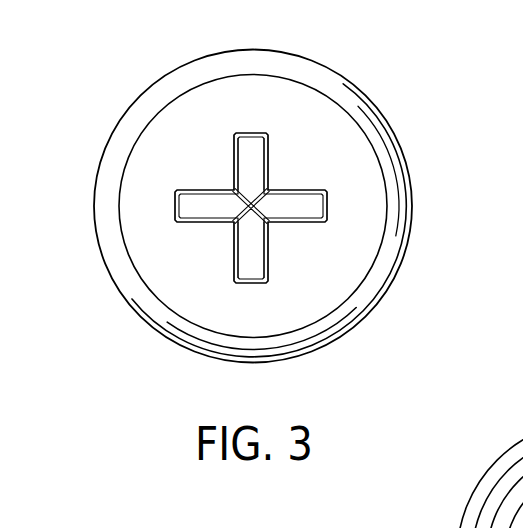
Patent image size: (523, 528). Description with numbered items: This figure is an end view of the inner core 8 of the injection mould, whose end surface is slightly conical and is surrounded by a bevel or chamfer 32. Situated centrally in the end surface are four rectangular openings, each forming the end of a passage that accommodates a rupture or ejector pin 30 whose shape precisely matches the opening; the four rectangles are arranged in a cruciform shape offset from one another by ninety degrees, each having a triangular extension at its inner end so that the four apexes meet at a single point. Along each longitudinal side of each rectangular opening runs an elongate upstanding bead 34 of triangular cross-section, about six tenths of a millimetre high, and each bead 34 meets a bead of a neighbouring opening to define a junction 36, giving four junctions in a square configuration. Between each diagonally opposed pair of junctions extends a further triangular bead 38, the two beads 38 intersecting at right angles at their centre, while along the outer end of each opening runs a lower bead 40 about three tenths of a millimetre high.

The inner core 8 is at (416, 164).
The rupture pins 30 is at (248, 166).
The bevel or chamfer 32 is at (105, 200).
The bead 34 is at (302, 220).
The junction 36 is at (267, 188).
The further triangular upstanding bead 38 is at (245, 217).
The further upstanding bead 40 is at (252, 133).